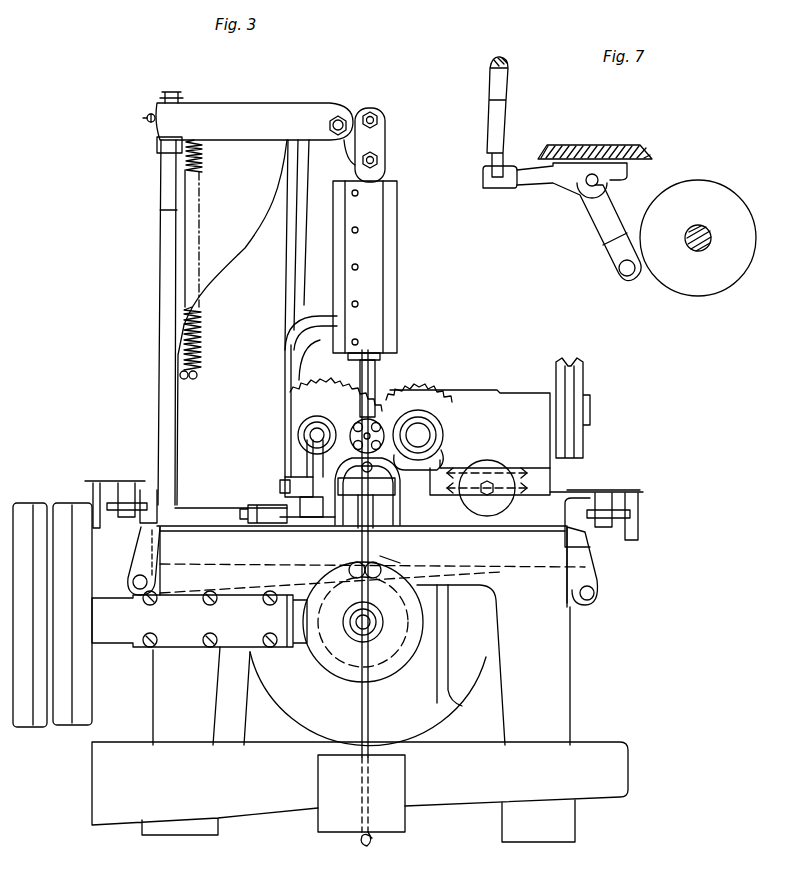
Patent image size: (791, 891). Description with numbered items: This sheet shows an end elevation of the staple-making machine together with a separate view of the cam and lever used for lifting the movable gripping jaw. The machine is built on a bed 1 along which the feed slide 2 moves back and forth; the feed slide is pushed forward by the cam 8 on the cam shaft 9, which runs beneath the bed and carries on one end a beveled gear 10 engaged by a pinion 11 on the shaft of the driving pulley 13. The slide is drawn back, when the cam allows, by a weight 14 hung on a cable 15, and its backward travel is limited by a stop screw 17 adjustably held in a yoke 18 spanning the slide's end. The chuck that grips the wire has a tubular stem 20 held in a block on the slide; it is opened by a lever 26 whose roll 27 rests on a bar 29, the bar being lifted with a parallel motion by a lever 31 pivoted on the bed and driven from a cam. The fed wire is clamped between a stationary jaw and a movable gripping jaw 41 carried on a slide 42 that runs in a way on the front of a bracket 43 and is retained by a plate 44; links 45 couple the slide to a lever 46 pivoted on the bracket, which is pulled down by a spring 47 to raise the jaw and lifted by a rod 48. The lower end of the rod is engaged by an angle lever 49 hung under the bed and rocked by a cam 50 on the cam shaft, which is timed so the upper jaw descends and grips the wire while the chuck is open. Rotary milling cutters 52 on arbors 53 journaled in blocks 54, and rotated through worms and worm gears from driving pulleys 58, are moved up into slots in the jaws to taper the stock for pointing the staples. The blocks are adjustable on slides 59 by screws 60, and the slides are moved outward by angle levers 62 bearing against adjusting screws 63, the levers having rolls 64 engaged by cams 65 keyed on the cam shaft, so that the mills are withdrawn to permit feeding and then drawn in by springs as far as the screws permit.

In FIG. 3, the bed 1 is at (494, 545).
In FIG. 7, the bed 1 is at (602, 143).
In FIG. 3, the feed slide 2 is at (442, 458).
In FIG. 3, the cam 8 is at (361, 665).
In FIG. 3, the cam shaft 9 is at (378, 635).
In FIG. 7, the cam shaft 9 is at (698, 251).
In FIG. 3, the beveled gear 10 is at (330, 679).
In FIG. 3, the pinion 11 is at (300, 655).
In FIG. 3, the driving pulley 13 is at (42, 730).
In FIG. 3, the weight 14 is at (361, 793).
In FIG. 3, the cable 15 is at (375, 720).
In FIG. 3, the stop screw 17 is at (425, 420).
In FIG. 3, the yoke 18 is at (428, 437).
In FIG. 3, the tubular stem 20 is at (372, 400).
In FIG. 3, the lever 26 is at (345, 466).
In FIG. 3, the roll 27 is at (312, 458).
In FIG. 3, the bar 29 is at (290, 476).
In FIG. 3, the lever 31 is at (270, 495).
In FIG. 3, the movable gripping jaw 41 is at (375, 372).
In FIG. 3, the movable jaw slide 42 is at (335, 358).
In FIG. 3, the bracket 43 is at (257, 322).
In FIG. 3, the plate 44 is at (380, 270).
In FIG. 3, the links 45 is at (386, 140).
In FIG. 3, the lever 46 is at (248, 116).
In FIG. 3, the spring 47 is at (200, 165).
In FIG. 3, the rod 48 is at (156, 258).
In FIG. 7, the rod 48 is at (508, 88).
In FIG. 7, the angle lever 49 is at (580, 228).
In FIG. 7, the cam 50 is at (698, 238).
In FIG. 3, the rotary milling cutters 52 is at (460, 357).
In FIG. 3, the arbors 53 is at (298, 435).
In FIG. 3, the blocks 54 is at (470, 442).
In FIG. 3, the driving pulleys 58 is at (585, 382).
In FIG. 3, the slides 59 is at (578, 492).
In FIG. 3, the screws 60 is at (492, 490).
In FIG. 3, the angle levers 62 is at (134, 552).
In FIG. 3, the adjusting screws 63 is at (90, 481).
In FIG. 3, the rolls 64 is at (350, 565).
In FIG. 3, the cams 65 is at (400, 563).